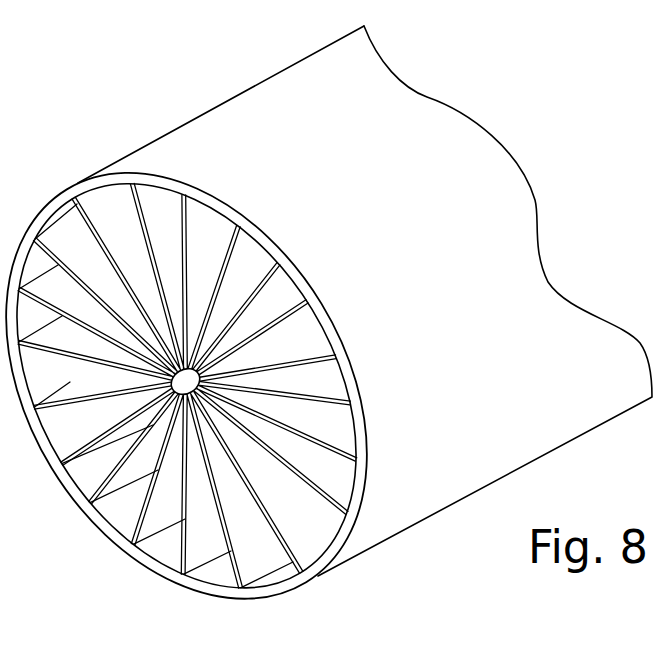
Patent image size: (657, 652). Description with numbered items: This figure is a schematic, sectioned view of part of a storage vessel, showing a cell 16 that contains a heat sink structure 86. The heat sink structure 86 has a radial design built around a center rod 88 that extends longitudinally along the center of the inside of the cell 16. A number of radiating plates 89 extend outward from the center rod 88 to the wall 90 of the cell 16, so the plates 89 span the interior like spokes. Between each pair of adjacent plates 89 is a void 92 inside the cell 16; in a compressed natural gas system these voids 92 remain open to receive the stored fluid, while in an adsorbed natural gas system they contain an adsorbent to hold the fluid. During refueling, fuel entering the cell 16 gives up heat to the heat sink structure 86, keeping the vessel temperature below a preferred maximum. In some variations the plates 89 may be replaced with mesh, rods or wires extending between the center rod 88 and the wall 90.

The cell 16 is at (237, 106).
The heat sink structure 86 is at (220, 379).
The center rod 88 is at (175, 382).
The radiating plates 89 is at (318, 362).
The wall 90 is at (63, 199).
The voids 92 is at (220, 226).